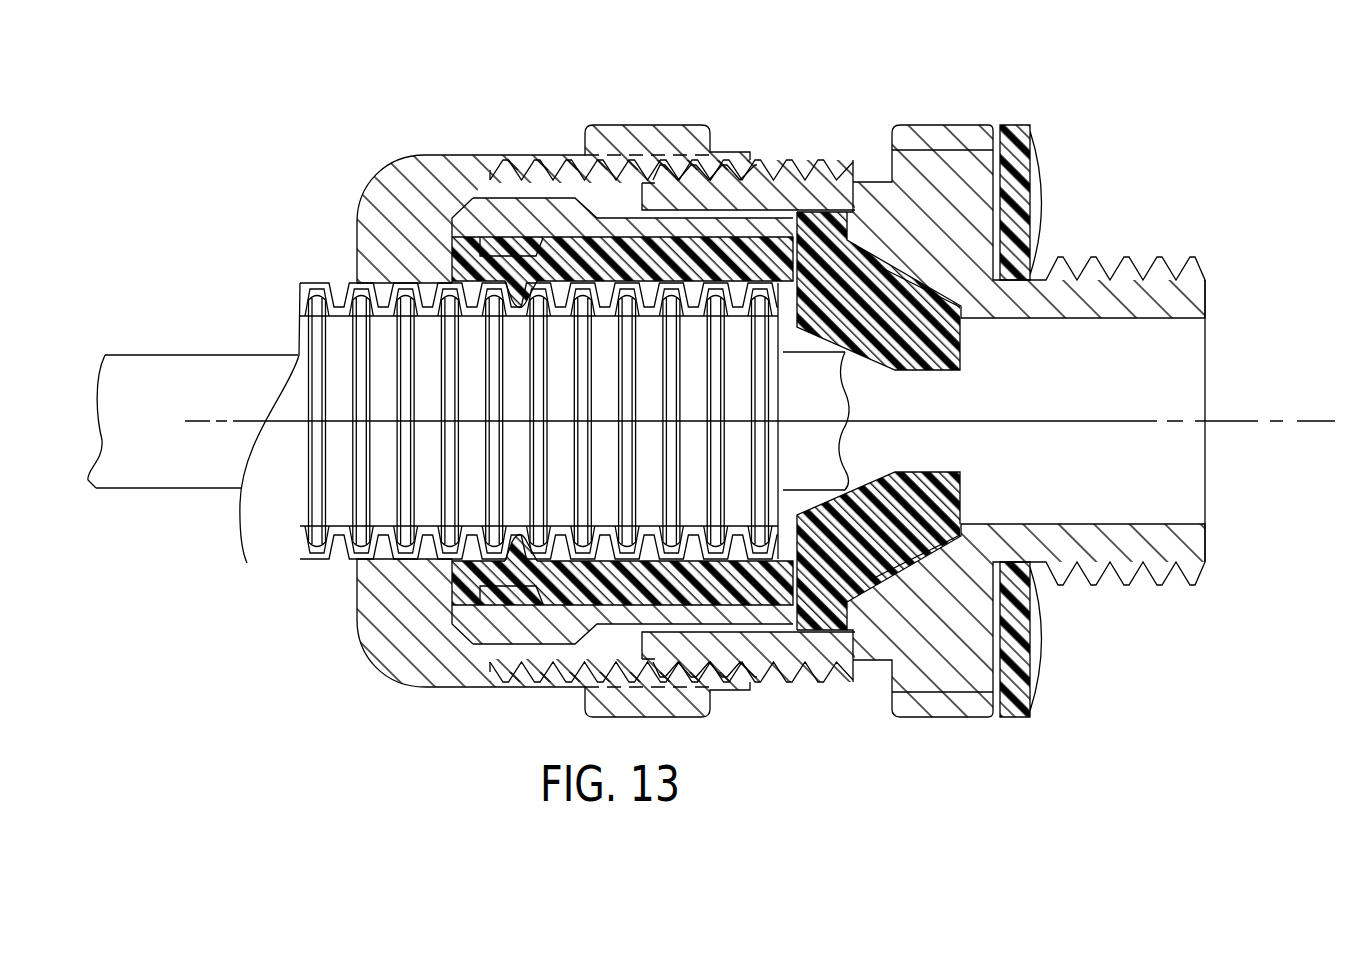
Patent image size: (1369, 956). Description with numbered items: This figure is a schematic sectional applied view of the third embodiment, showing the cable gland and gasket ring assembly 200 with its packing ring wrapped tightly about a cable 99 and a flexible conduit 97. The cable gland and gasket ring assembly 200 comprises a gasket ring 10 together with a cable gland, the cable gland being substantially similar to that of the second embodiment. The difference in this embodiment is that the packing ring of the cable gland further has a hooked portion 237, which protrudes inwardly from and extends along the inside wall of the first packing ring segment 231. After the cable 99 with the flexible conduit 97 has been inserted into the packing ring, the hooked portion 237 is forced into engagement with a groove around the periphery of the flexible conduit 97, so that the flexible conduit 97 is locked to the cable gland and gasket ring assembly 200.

The cable gland and gasket ring assembly 200 is at (262, 177).
The gasket ring 10 is at (1013, 137).
The first packing ring segment 231 is at (773, 248).
The hooked portion 237 is at (520, 307).
The flexible conduit 97 is at (313, 280).
The cable 99 is at (137, 463).